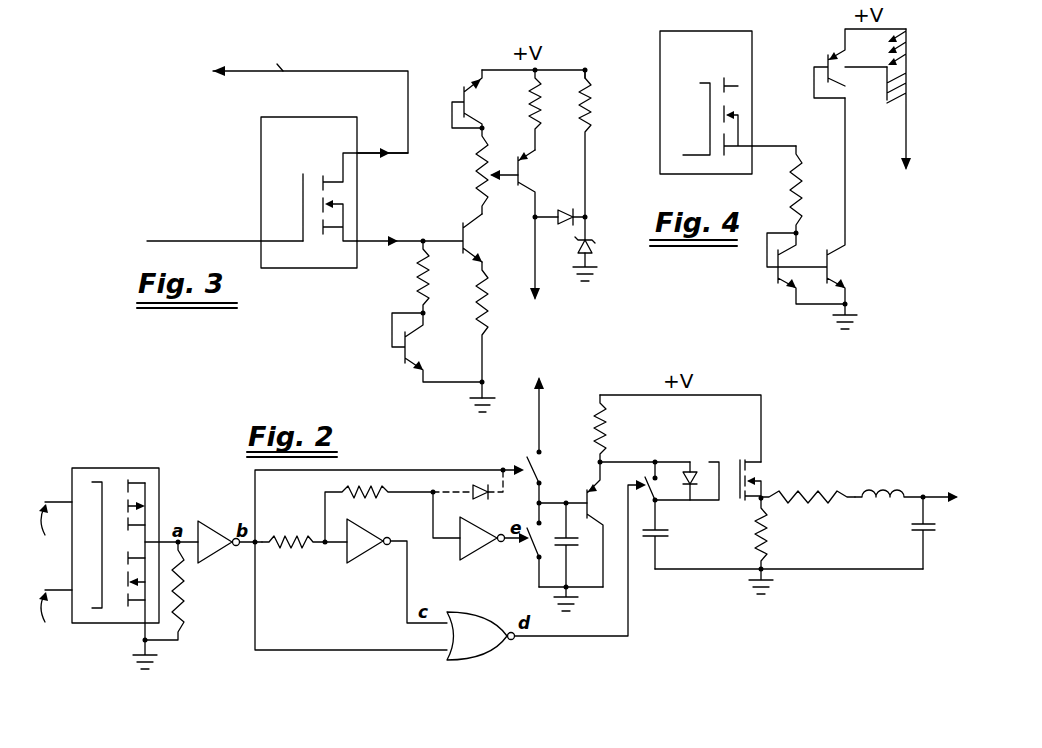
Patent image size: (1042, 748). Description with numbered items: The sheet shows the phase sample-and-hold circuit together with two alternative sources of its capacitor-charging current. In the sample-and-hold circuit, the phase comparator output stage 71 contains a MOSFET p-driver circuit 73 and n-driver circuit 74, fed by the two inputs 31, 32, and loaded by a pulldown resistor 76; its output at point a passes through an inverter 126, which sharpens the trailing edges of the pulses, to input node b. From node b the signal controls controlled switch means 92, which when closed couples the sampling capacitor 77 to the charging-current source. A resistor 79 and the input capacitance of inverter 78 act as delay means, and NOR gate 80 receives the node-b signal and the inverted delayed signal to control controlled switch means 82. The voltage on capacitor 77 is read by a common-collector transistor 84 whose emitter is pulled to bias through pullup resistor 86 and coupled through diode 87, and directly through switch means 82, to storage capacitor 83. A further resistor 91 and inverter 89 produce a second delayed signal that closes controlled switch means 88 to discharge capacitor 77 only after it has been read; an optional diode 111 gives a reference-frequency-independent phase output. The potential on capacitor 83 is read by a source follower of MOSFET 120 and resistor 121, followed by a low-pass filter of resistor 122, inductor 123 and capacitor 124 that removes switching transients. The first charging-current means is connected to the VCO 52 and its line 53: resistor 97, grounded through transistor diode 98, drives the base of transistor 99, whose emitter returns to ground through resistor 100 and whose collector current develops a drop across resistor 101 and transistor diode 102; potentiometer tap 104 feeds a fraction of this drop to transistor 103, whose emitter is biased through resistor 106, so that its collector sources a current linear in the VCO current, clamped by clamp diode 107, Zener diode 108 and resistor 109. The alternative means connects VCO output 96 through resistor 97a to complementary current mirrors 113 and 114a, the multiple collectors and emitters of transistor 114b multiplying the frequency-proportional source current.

In FIG. 3, the VCO 52 is at (261, 176).
In FIG. 4, the VCO 52 is at (660, 58).
In FIG. 3, the output line 53 is at (370, 156).
In FIG. 3, the VCO output 96 is at (368, 241).
In FIG. 4, the VCO output 96 is at (783, 150).
In FIG. 3, the resistor 97 is at (428, 265).
In FIG. 3, the transistor diode 98 is at (416, 350).
In FIG. 3, the transistor 99 is at (470, 243).
In FIG. 3, the resistor 100 is at (487, 311).
In FIG. 3, the resistor 101 is at (478, 157).
In FIG. 3, the transistor diode 102 is at (470, 103).
In FIG. 3, the transistor 103 is at (526, 173).
In FIG. 3, the potentiometer tap 104 is at (505, 178).
In FIG. 3, the resistor 106 is at (540, 110).
In FIG. 3, the clamp diode 107 is at (575, 228).
In FIG. 3, the Zener diode 108 is at (594, 248).
In FIG. 3, the resistor 109 is at (590, 112).
In FIG. 4, the resistor 97a is at (800, 183).
In FIG. 4, the current mirror 113 is at (805, 267).
In FIG. 4, the current mirror transistor 114a is at (817, 65).
In FIG. 4, the transistor 114b is at (880, 68).
In FIG. 2, the input line 31 is at (55, 523).
In FIG. 2, the input line 32 is at (55, 611).
In FIG. 2, the output stage 71 is at (118, 623).
In FIG. 2, the p-driver circuit 73 is at (125, 505).
In FIG. 2, the n-driver circuit 74 is at (125, 579).
In FIG. 2, the pulldown resistor 76 is at (185, 592).
In FIG. 2, the inverter 126 is at (205, 556).
In FIG. 2, the resistor 79 is at (283, 548).
In FIG. 2, the resistor 91 is at (365, 497).
In FIG. 2, the inverter 78 is at (362, 556).
In FIG. 2, the diode 111 is at (475, 487).
In FIG. 2, the inverter 89 is at (483, 557).
In FIG. 2, the NOR gate 80 is at (470, 655).
In FIG. 2, the controlled switch means 92 is at (533, 480).
In FIG. 2, the controlled switch means 88 is at (529, 548).
In FIG. 2, the capacitor 77 is at (577, 548).
In FIG. 2, the transistor 84 is at (592, 504).
In FIG. 2, the pullup resistor 86 is at (606, 442).
In FIG. 2, the diode 87 is at (690, 462).
In FIG. 2, the controlled switch means 82 is at (648, 490).
In FIG. 2, the storage capacitor 83 is at (668, 538).
In FIG. 2, the MOSFET 120 is at (739, 492).
In FIG. 2, the resistor 121 is at (770, 540).
In FIG. 2, the resistor 122 is at (800, 490).
In FIG. 2, the inductor 123 is at (865, 490).
In FIG. 2, the capacitor 124 is at (930, 530).